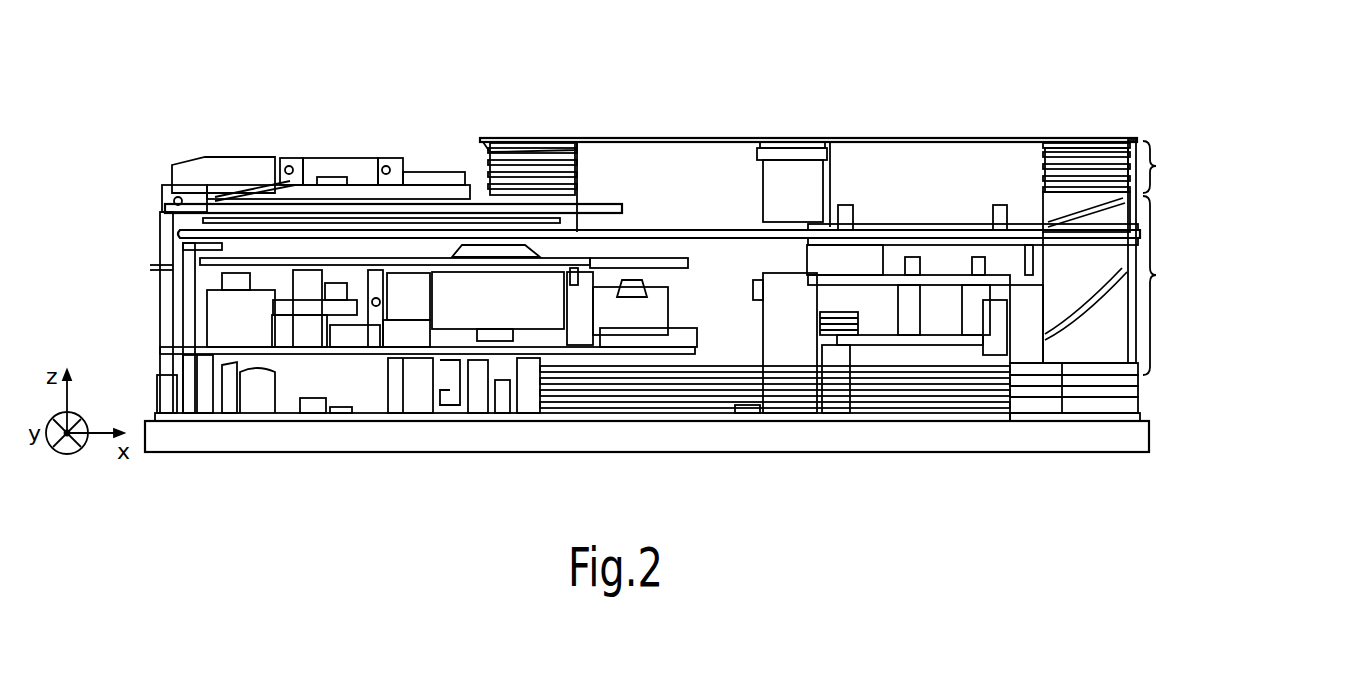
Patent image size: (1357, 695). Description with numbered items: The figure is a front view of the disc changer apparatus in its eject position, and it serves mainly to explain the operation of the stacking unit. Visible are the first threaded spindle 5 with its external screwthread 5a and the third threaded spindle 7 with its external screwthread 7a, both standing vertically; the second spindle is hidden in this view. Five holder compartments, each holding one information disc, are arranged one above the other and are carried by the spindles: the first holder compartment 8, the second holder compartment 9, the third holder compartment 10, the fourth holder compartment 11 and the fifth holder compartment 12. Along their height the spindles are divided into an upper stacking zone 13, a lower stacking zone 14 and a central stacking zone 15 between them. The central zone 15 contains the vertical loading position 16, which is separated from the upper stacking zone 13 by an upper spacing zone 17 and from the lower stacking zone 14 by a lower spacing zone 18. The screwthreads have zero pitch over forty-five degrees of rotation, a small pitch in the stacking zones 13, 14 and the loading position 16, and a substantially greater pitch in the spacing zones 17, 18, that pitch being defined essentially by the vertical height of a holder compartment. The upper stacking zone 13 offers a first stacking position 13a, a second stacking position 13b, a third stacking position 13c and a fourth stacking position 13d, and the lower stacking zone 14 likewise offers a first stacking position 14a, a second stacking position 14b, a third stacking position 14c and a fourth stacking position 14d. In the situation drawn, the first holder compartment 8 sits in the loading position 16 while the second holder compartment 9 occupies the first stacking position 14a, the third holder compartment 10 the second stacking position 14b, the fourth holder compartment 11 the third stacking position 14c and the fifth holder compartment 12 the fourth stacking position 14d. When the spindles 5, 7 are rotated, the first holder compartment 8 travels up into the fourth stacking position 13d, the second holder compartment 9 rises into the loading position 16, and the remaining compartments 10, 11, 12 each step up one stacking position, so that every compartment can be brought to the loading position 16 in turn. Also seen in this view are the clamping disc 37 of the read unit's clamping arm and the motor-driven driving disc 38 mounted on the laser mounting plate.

The first threaded spindle 5 is at (538, 160).
The external screwthread 5a is at (592, 150).
The third threaded spindle 7 is at (1078, 148).
The external screwthread 7a is at (1130, 150).
The first holder compartment 8 is at (905, 232).
The second holder compartment 9 is at (1138, 368).
The third holder compartment 10 is at (1138, 380).
The fourth holder compartment 11 is at (1138, 392).
The fifth holder compartment 12 is at (1138, 404).
The upper stacking zone 13 is at (1157, 166).
The first stacking position 13a is at (1267, 148).
The second stacking position 13b is at (1267, 158).
The third stacking position 13c is at (1267, 170).
The fourth stacking position 13d is at (1267, 182).
The lower stacking zone 14 is at (1212, 366).
The first stacking position 14a is at (1265, 372).
The second stacking position 14b is at (1265, 382).
The third stacking position 14c is at (1265, 397).
The fourth stacking position 14d is at (1265, 406).
The central stacking zone 15 is at (1157, 275).
The loading position 16 is at (1243, 232).
The upper spacing zone 17 is at (1240, 188).
The lower spacing zone 18 is at (1244, 246).
The clamping disc 37 is at (612, 208).
The driving disc 38 is at (480, 248).